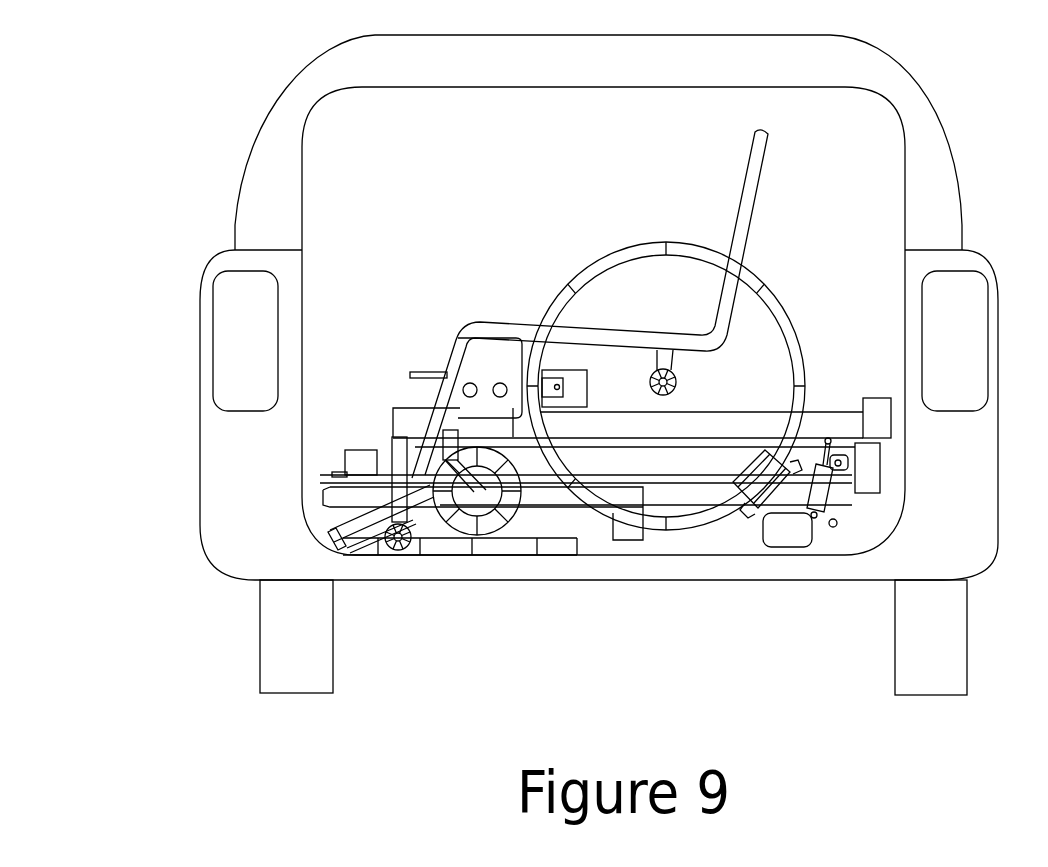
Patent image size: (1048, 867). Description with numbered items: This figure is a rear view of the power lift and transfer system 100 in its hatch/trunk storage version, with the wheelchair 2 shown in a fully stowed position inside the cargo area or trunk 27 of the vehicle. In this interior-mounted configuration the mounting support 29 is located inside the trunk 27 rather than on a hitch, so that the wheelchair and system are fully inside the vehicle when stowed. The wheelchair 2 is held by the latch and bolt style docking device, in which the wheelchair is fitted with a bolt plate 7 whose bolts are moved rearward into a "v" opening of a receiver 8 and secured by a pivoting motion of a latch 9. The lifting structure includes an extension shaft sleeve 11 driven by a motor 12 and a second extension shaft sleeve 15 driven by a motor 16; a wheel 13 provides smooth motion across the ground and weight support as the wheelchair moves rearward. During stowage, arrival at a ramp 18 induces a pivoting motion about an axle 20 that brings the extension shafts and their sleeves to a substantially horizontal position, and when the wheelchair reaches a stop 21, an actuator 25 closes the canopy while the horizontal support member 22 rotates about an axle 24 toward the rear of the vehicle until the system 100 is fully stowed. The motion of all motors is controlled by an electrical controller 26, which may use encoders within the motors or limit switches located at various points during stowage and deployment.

The power lift and transfer system 100 is at (130, 170).
The wheelchair 2 is at (743, 225).
The bolt plate 7 is at (484, 368).
The receiver 8 is at (578, 380).
The latch 9 is at (423, 372).
The extension shaft sleeve 11 is at (603, 430).
The motor 12 is at (880, 417).
The wheel 13 is at (372, 555).
The extension shaft sleeve 15 is at (585, 468).
The motor 16 is at (870, 477).
The ramp 18 is at (332, 532).
The axle 20 is at (845, 465).
The stop 21 is at (817, 515).
The horizontal support member 22 is at (675, 495).
The axle 24 is at (363, 462).
The actuator 25 is at (810, 512).
The electrical controller 26 is at (785, 542).
The trunk 27 is at (595, 225).
The mounting support 29 is at (522, 528).